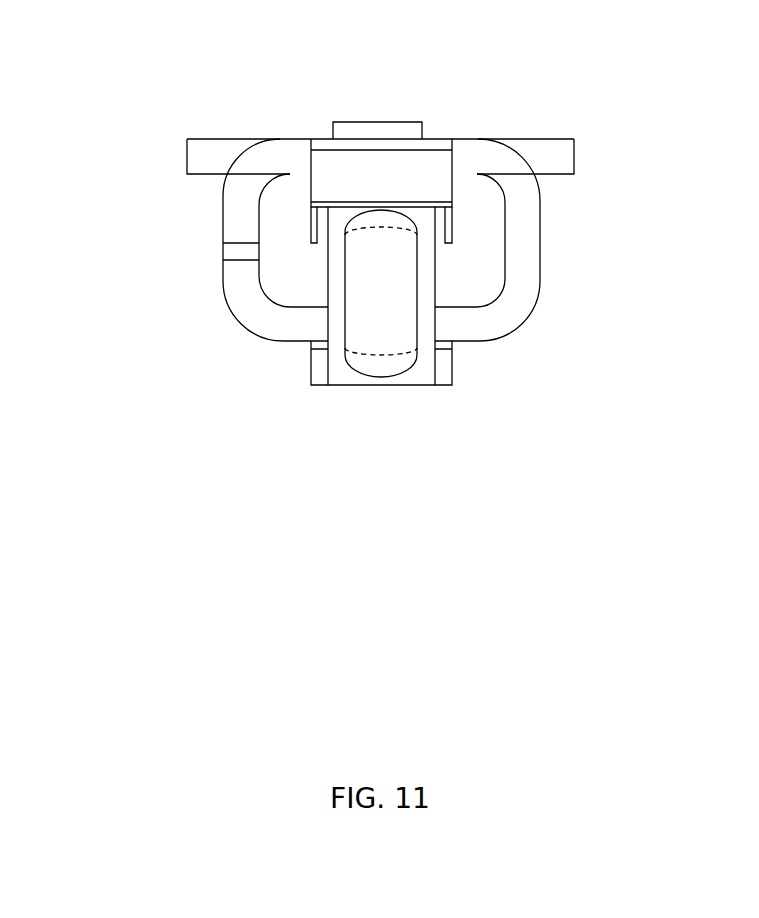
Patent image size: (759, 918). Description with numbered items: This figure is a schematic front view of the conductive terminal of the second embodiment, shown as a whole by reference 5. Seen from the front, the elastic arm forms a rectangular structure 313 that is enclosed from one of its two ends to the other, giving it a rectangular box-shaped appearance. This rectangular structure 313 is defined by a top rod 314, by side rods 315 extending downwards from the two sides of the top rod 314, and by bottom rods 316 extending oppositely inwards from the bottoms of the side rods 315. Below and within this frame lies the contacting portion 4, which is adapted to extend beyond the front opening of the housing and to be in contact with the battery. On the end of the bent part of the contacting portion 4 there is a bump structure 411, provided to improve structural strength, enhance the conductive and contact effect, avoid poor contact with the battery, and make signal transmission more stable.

The connector assembly 5 is at (208, 108).
The top rod 314 is at (300, 150).
The rectangular structure 313 is at (543, 208).
The side rods 315 is at (232, 233).
The bottom rods 316 is at (305, 330).
The contacting portion 4 is at (415, 395).
The bump structure 411 is at (388, 300).